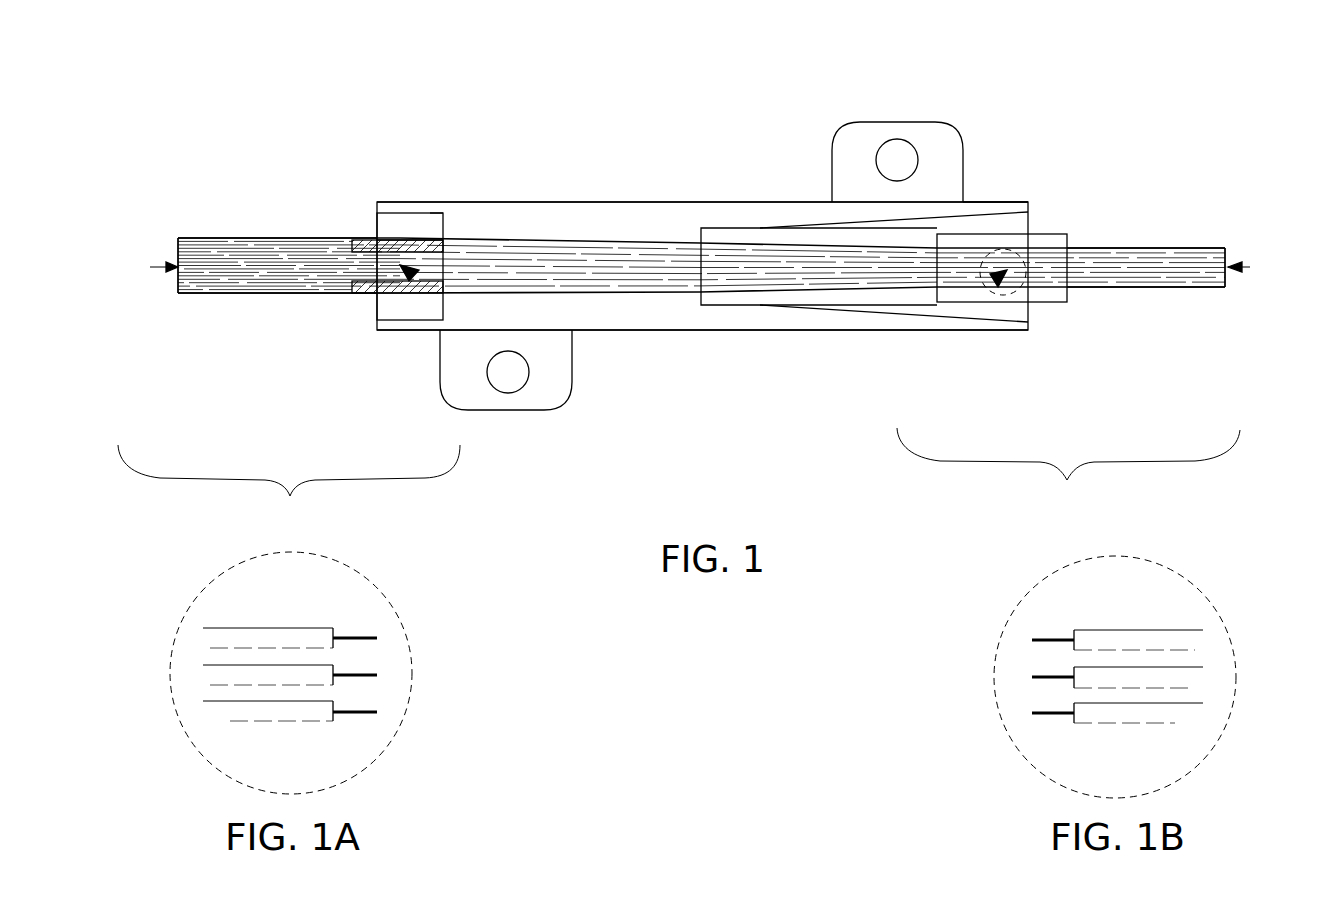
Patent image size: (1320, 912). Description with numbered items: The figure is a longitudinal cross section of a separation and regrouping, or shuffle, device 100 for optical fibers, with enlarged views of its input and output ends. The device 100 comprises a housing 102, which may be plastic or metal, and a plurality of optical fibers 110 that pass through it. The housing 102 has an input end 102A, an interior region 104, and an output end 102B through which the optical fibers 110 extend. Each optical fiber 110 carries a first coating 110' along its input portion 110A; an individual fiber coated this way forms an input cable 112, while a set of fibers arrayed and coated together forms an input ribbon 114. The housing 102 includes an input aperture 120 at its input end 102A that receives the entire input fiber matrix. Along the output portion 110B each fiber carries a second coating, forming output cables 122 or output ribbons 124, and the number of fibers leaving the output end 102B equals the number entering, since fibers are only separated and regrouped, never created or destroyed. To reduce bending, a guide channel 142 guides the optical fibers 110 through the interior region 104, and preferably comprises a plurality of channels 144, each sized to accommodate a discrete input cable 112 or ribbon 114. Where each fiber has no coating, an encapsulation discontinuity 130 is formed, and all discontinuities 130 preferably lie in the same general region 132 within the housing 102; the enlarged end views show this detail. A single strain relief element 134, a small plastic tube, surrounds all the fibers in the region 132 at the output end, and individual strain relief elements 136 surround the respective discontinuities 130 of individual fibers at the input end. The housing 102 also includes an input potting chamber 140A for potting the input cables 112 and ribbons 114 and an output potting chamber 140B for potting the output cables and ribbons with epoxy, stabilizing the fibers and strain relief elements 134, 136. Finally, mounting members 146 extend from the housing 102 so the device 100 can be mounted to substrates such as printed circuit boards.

In FIG. 1, the separation and regrouping device 100 is at (732, 40).
In FIG. 1, the housing 102 is at (670, 204).
In FIG. 1, the input end 102A is at (372, 213).
In FIG. 1, the output end 102B is at (1030, 330).
In FIG. 1, the interior region 104 is at (594, 204).
In FIG. 1, the optical fibers 110 is at (701, 229).
In FIG. 1A, the optical fibers 110 is at (340, 651).
In FIG. 1B, the optical fibers 110 is at (1061, 649).
In FIG. 1, the first coating 110' is at (271, 295).
In FIG. 1A, the first coating 110' is at (268, 653).
In FIG. 1, the input portion 110A is at (289, 487).
In FIG. 1, the output portion 110B is at (1068, 474).
In FIG. 1, the input cable 112 is at (205, 238).
In FIG. 1, the input ribbon 114 is at (155, 266).
In FIG. 1, the input aperture 120 is at (375, 240).
In FIG. 1, the output cable 122 is at (1228, 247).
In FIG. 1, the output ribbon 124 is at (1248, 266).
In FIG. 1, the encapsulation discontinuity 130 is at (1000, 274).
In FIG. 1A, the encapsulation discontinuity 130 is at (333, 722).
In FIG. 1B, the encapsulation discontinuity 130 is at (1074, 721).
In FIG. 1, the region 132 is at (990, 284).
In FIG. 1, the strain relief element 134 is at (997, 207).
In FIG. 1, the individual strain relief element 136 is at (420, 252).
In FIG. 1, the input potting chamber 140A is at (412, 212).
In FIG. 1, the output potting chamber 140B is at (892, 304).
In FIG. 1, the guide channel 142 is at (624, 322).
In FIG. 1, the channels 144 is at (403, 294).
In FIG. 1, the mounting members 146 is at (943, 148).